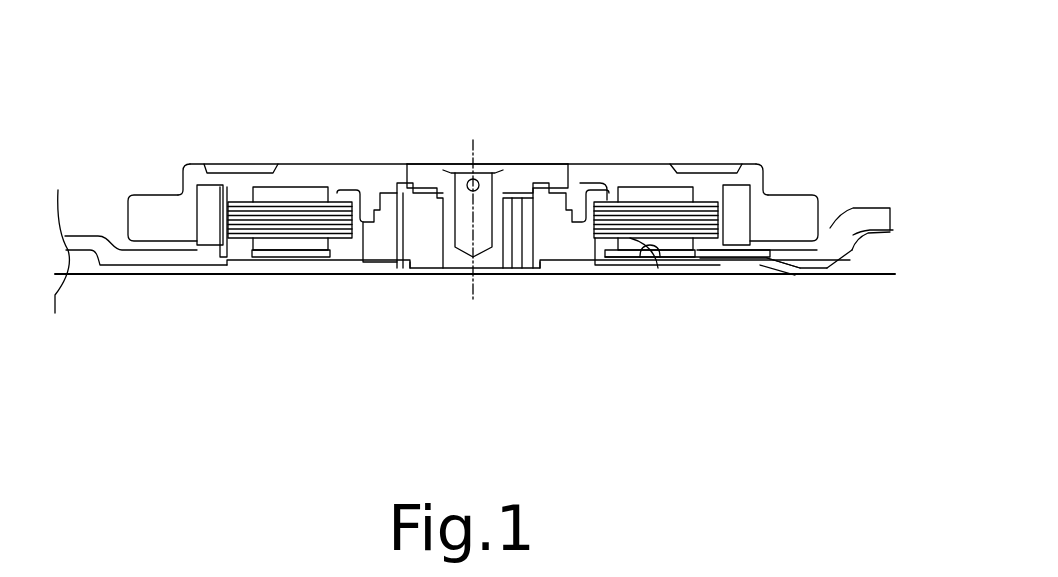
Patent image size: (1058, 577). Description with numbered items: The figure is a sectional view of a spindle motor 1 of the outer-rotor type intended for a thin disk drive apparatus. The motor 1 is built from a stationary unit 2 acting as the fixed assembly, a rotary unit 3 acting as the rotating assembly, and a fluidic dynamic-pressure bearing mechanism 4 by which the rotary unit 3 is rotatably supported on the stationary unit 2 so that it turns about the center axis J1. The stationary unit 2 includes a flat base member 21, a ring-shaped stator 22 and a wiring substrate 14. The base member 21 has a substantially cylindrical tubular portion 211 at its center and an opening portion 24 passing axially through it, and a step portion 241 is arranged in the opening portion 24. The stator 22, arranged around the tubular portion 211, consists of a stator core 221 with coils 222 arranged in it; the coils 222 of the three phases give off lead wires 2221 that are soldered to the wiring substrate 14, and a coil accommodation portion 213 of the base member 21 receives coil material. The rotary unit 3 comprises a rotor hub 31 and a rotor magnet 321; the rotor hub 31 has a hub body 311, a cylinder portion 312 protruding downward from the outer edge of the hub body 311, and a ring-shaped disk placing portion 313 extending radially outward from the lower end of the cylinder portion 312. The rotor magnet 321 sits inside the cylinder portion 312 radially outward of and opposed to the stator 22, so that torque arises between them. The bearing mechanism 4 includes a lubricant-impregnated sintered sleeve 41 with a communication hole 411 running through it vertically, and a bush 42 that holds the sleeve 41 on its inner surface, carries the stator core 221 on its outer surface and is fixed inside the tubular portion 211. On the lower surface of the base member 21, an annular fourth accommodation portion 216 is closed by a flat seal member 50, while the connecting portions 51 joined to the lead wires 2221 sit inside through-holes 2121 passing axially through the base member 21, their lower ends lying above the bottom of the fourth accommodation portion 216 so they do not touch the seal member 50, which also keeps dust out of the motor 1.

The spindle motor 1 is at (80, 38).
The stationary unit 2 is at (480, 266).
The rotary unit 3 is at (453, 178).
The bearing mechanism 4 is at (403, 297).
The wiring substrate 14 is at (893, 312).
The base member 21 is at (83, 240).
The stator 22 is at (494, 247).
The opening portion 24 is at (792, 257).
The rotor hub 31 is at (542, 176).
The sleeve 41 is at (410, 160).
The bush 42 is at (377, 250).
The seal member 50 is at (675, 262).
The connecting portion 51 is at (657, 262).
The tubular portion 211 is at (342, 255).
The coil accommodation portion 213 is at (262, 252).
The fourth accommodation portion 216 is at (722, 262).
The stator core 221 is at (247, 202).
The coil 222 is at (283, 247).
The step portion 241 is at (755, 262).
The hub body 311 is at (332, 172).
The cylinder portion 312 is at (183, 190).
The disk placing portion 313 is at (137, 193).
The rotor magnet 321 is at (208, 222).
The communication hole 411 is at (523, 213).
The through-hole 2121 is at (640, 262).
The lead wire 2221 is at (633, 238).
The center axis J1 is at (477, 147).